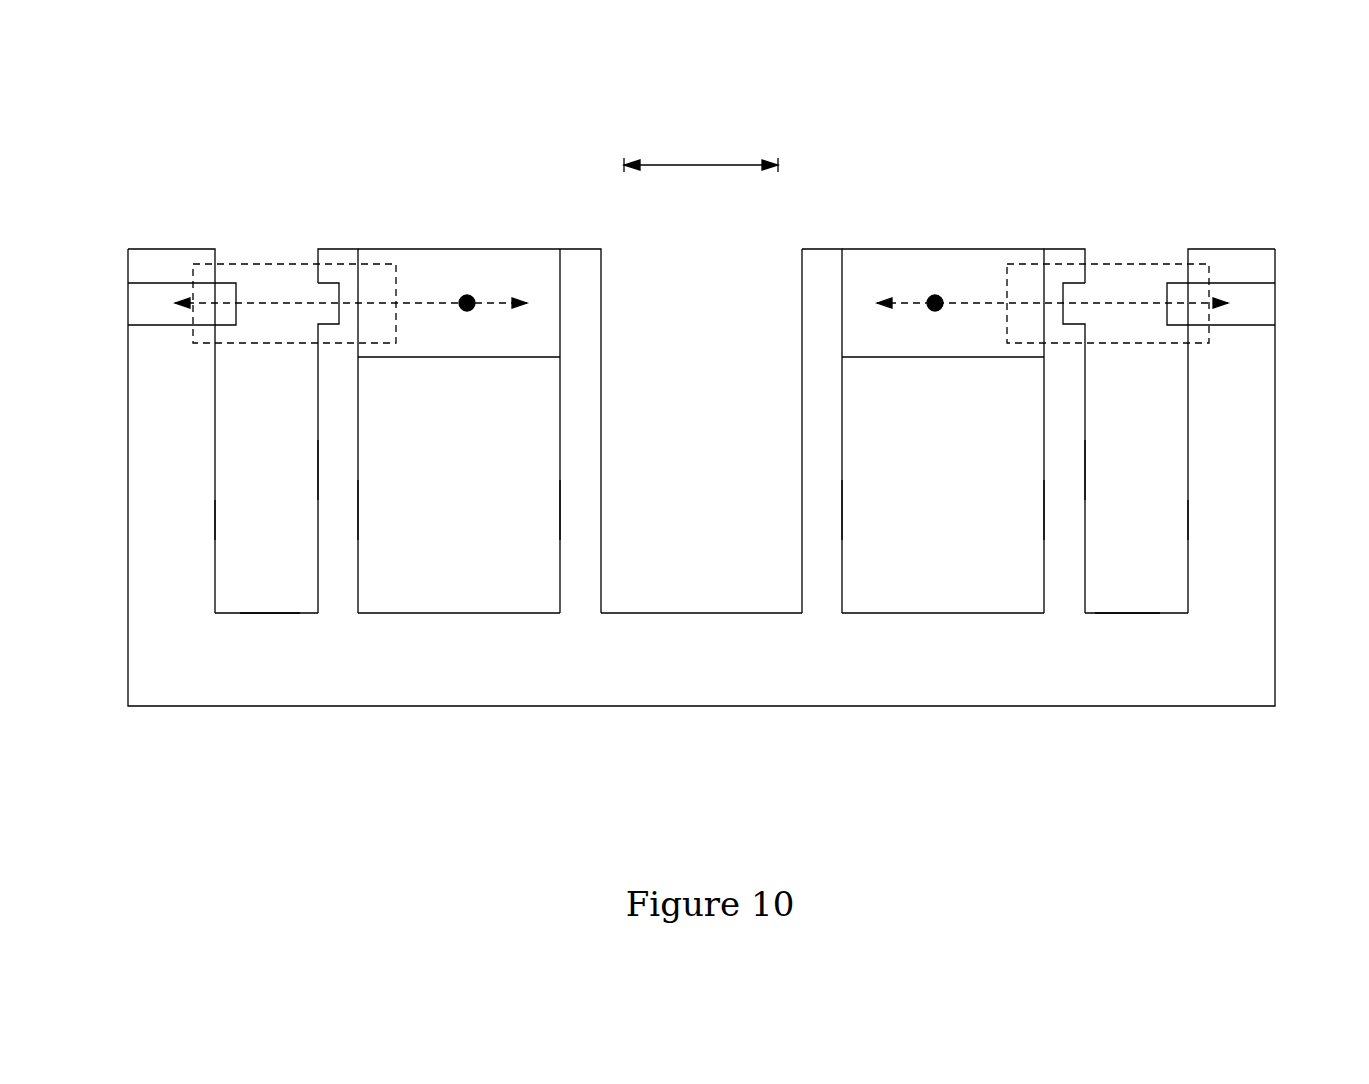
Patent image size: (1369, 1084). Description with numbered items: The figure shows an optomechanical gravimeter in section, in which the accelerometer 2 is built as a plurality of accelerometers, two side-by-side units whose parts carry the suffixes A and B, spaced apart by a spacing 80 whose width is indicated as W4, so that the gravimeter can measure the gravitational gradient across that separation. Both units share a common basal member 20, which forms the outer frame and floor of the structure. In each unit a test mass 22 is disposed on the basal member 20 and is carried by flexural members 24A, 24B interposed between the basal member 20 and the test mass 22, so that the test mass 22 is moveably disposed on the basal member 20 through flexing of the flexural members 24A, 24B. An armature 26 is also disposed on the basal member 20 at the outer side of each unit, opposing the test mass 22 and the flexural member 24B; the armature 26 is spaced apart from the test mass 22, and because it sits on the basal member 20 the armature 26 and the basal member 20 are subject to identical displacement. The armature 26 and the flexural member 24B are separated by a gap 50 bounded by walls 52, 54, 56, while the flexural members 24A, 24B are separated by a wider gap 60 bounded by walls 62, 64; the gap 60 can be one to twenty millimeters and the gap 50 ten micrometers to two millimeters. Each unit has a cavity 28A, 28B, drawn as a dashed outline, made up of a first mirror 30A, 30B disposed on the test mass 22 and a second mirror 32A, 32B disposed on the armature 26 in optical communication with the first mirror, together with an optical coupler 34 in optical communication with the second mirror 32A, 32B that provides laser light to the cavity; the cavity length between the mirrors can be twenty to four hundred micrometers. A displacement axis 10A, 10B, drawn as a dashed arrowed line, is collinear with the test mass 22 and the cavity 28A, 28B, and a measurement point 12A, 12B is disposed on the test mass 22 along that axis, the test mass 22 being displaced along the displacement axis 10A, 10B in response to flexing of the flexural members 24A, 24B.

The first accelerometer 2 is at (92, 91).
The displacement axis 10A is at (898, 299).
The displacement axis 10B is at (504, 299).
The measurement point 12A is at (935, 295).
The measurement point 12B is at (467, 295).
The basal member 20 is at (395, 695).
The test mass 22 is at (507, 262).
The flexural member 24A is at (600, 432).
The flexural member 24B is at (340, 432).
The armature 26 is at (145, 272).
The cavity 28A is at (1112, 345).
The cavity 28B is at (250, 345).
The first mirror 30A is at (1052, 290).
The first mirror 30B is at (346, 290).
The second mirror 32A is at (1176, 292).
The second mirror 32B is at (222, 292).
The optical coupler 34 is at (163, 290).
The gap 50 is at (245, 600).
The wall 52 is at (318, 476).
The wall 54 is at (215, 522).
The wall 56 is at (286, 612).
The gap 60 is at (502, 600).
The wall 62 is at (560, 522).
The wall 64 is at (358, 522).
The spacing 80 is at (702, 246).
The width W4 is at (701, 155).